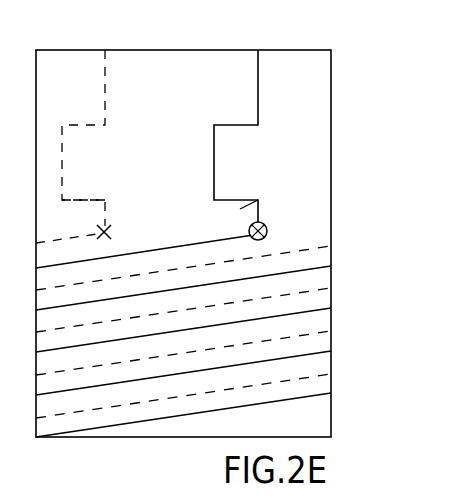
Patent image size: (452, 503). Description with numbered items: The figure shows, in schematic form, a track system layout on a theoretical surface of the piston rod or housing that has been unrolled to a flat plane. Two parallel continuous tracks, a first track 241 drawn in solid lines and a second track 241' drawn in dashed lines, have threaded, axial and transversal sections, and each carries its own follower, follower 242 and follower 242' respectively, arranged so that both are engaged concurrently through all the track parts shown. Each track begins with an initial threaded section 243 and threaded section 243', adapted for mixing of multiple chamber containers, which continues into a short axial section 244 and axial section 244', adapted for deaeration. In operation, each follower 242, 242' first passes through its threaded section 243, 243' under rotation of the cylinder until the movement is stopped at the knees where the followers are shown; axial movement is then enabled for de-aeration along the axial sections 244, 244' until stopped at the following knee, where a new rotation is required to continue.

The track 241 is at (255, 136).
The track 241' is at (108, 138).
The follower 242 is at (282, 224).
The follower 242' is at (99, 226).
The threaded section 243 is at (212, 388).
The threaded section 243' is at (214, 343).
The axial section 244 is at (275, 194).
The axial section 244' is at (111, 196).